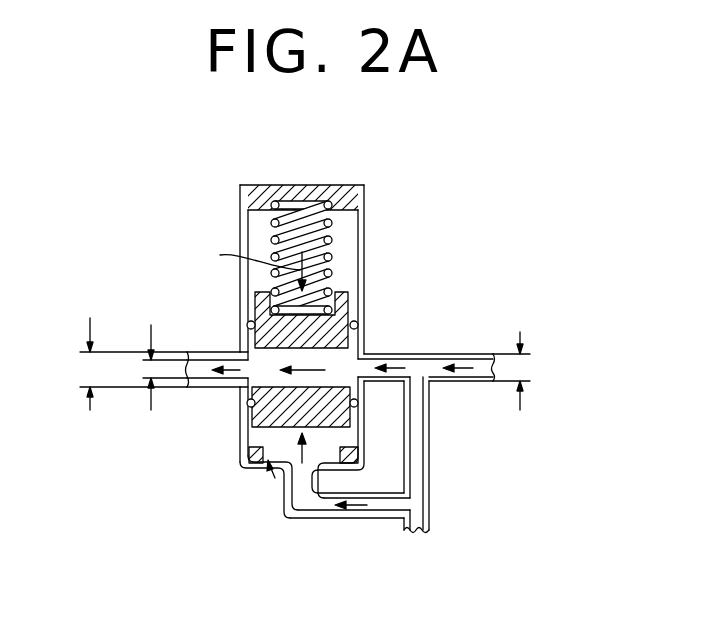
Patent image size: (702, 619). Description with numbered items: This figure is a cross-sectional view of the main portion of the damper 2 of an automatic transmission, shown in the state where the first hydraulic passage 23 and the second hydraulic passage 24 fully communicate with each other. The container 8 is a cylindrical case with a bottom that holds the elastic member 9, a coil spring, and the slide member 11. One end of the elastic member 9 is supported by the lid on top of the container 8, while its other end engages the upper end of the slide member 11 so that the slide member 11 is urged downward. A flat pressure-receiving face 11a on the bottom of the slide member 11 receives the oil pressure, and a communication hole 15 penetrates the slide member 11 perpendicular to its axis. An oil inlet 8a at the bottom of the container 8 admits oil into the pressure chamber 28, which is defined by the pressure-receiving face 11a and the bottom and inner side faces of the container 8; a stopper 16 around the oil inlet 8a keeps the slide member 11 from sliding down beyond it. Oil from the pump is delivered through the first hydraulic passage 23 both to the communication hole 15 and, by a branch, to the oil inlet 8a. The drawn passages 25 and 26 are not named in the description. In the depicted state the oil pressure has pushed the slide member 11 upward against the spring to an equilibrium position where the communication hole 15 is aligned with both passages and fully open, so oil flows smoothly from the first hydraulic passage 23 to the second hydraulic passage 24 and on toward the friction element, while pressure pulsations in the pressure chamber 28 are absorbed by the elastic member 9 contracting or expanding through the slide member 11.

The damper 2 is at (212, 208).
The container 8 is at (365, 222).
The oil inlet 8a is at (291, 482).
The elastic member 9 is at (340, 253).
The slide member 11 is at (350, 306).
The pressure-receiving face 11a is at (247, 412).
The communication hole 15 is at (240, 358).
The stopper 16 is at (252, 455).
The first hydraulic passage 23 is at (432, 358).
The second hydraulic passage 24 is at (197, 360).
The branch passage 25 is at (418, 442).
The pressure introduction passage 26 is at (318, 508).
The pressure chamber 28 is at (268, 470).